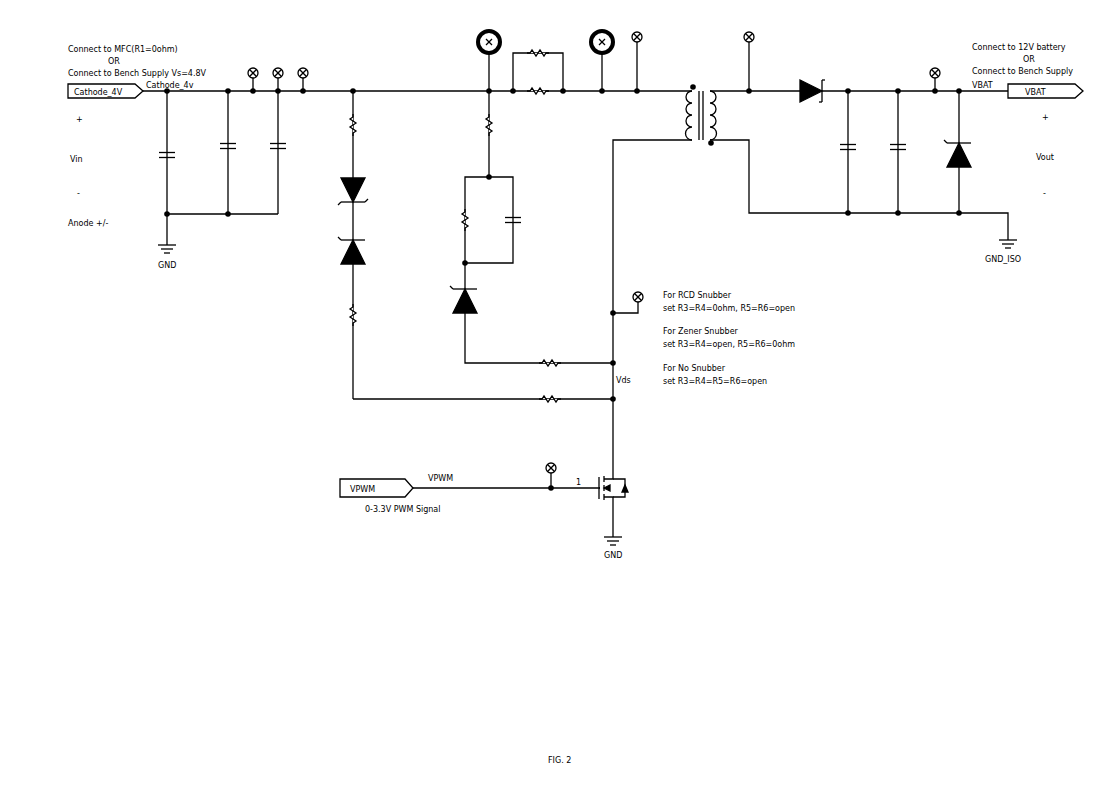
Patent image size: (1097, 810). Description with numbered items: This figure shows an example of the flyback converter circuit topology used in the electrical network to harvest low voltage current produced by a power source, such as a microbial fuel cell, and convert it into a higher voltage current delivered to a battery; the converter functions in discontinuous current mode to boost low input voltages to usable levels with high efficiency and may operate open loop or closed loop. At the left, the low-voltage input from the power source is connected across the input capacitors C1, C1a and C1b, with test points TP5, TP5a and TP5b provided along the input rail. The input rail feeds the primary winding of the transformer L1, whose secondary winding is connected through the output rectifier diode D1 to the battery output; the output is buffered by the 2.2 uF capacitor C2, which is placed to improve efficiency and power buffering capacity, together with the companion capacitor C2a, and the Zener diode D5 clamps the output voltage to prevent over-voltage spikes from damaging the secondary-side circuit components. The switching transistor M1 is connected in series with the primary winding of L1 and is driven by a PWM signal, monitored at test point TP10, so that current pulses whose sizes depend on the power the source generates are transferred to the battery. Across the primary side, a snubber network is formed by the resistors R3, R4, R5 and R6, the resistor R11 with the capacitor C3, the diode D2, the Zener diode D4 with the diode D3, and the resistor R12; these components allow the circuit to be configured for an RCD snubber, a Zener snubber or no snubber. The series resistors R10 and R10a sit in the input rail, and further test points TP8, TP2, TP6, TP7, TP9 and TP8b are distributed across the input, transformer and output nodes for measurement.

The input bulk capacitor 1000u C1 is at (182, 152).
The input capacitor 10u C1a is at (238, 152).
The input capacitor 100u DNP C1b is at (290, 151).
The test point TP5 is at (258, 83).
The test point TP5a is at (281, 83).
The test point TP5b is at (305, 83).
The snubber resistor R3 is at (362, 134).
The zener diode NZH15B D4 is at (372, 191).
The Schottky diode PMEG40T10ERX D3 is at (385, 250).
The resistor 1K R12 is at (362, 331).
The snubber resistor R4 is at (484, 399).
The snubber resistor R5 is at (498, 135).
The RCD snubber resistor R11 is at (475, 221).
The RCD snubber capacitor C3 is at (515, 220).
The snubber diode PMEG40T10ERX D2 is at (496, 297).
The snubber resistor R6 is at (540, 344).
The test point TP8 is at (469, 61).
The test point TP2 is at (593, 62).
The resistor R10a is at (538, 66).
The resistor R10 is at (537, 89).
The test point TP6 is at (644, 58).
The test point TP7 is at (756, 58).
The transformer MSD1514-153MED L1 is at (711, 131).
The test point TP9 is at (631, 304).
The output rectifier diode D1 is at (828, 79).
The capacitor C2 is at (858, 153).
The output capacitor DNP C2a is at (907, 152).
The output test point TP8b is at (937, 83).
The output zener diode NZH15B D5 is at (978, 152).
The switching MOSFET Si2356DS M1 is at (635, 509).
The PWM test point TP10 is at (555, 478).